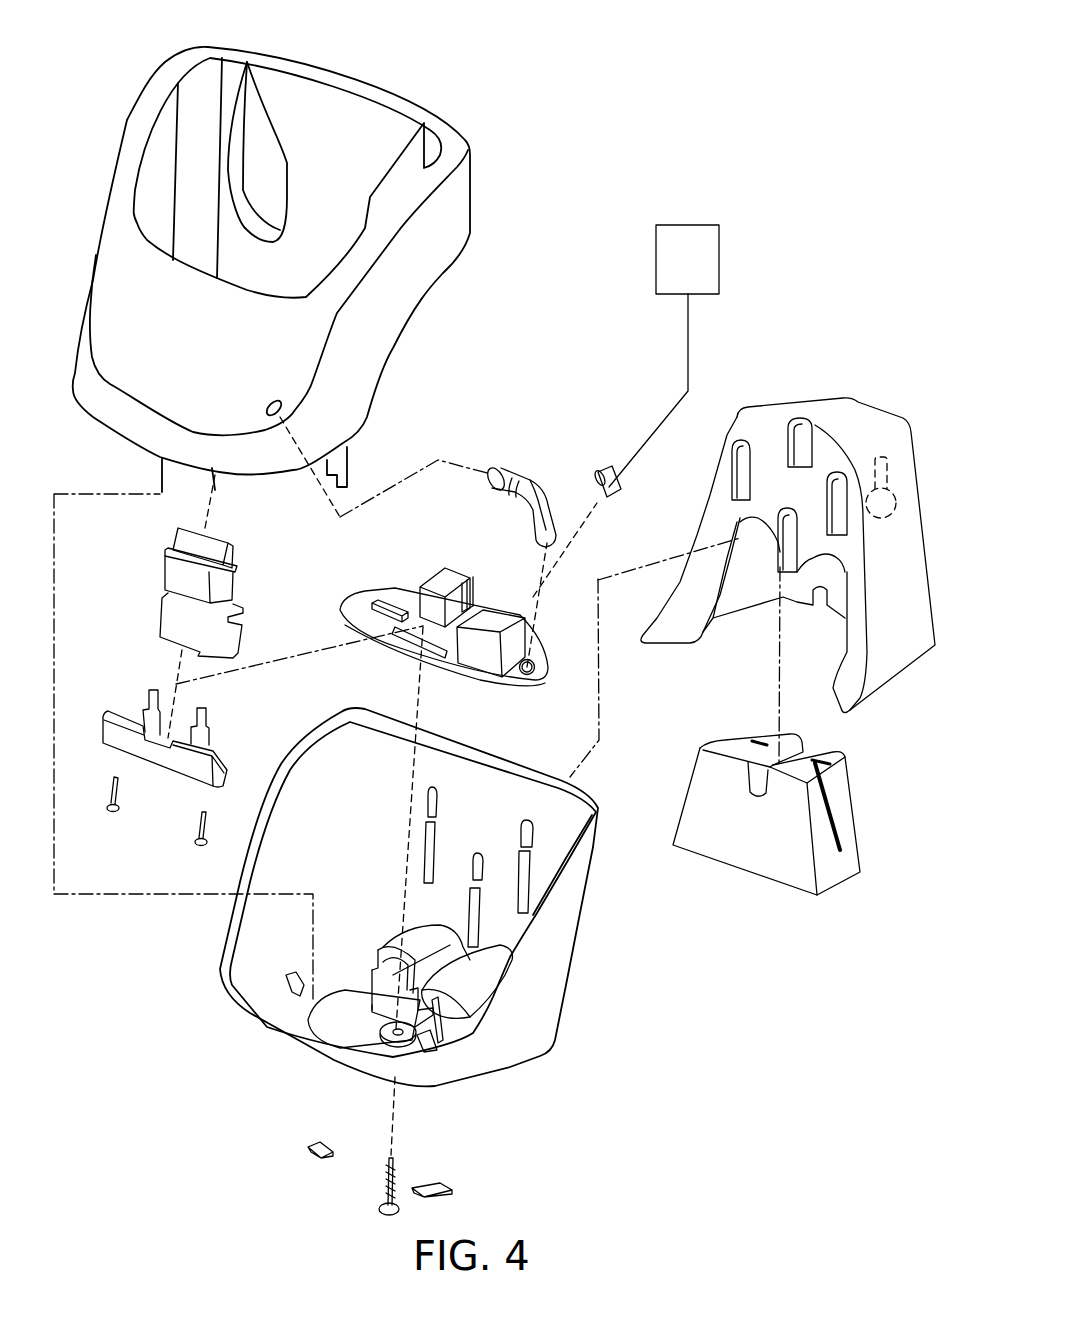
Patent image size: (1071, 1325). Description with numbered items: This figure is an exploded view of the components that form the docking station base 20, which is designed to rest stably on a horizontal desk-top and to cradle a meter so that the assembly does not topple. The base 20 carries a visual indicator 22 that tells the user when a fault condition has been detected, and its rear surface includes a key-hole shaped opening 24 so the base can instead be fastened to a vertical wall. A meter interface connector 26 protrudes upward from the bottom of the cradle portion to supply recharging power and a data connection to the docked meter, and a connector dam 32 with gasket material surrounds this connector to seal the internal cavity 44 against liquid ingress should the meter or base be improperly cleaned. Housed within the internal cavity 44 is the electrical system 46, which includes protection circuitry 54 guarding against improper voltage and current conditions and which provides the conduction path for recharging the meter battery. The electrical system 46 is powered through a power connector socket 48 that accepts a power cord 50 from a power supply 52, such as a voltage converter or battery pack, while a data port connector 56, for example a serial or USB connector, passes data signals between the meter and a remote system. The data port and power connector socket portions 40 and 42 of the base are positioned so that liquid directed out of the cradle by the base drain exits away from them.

The base 20 is at (670, 107).
The visual indicator 22 is at (522, 483).
The key-hole shaped opening 24 is at (885, 522).
The meter interface connector 26 is at (184, 541).
The connector dam 32 is at (180, 764).
The data port socket portion 40 is at (470, 768).
The power connector socket portion 42 is at (483, 978).
The internal cavity 44 is at (363, 732).
The electrical system 46 is at (345, 608).
The power connector socket 48 is at (495, 620).
The power cord 50 is at (688, 338).
The power supply 52 is at (702, 271).
The protection circuitry 54 is at (382, 607).
The data port connector 56 is at (452, 578).